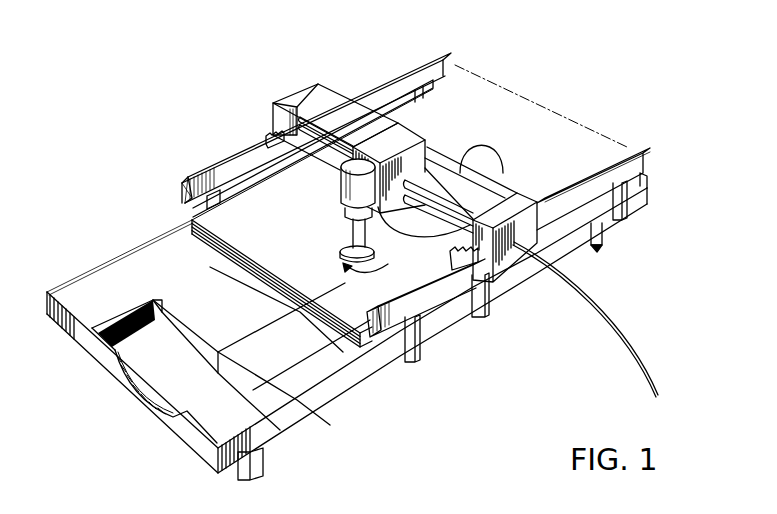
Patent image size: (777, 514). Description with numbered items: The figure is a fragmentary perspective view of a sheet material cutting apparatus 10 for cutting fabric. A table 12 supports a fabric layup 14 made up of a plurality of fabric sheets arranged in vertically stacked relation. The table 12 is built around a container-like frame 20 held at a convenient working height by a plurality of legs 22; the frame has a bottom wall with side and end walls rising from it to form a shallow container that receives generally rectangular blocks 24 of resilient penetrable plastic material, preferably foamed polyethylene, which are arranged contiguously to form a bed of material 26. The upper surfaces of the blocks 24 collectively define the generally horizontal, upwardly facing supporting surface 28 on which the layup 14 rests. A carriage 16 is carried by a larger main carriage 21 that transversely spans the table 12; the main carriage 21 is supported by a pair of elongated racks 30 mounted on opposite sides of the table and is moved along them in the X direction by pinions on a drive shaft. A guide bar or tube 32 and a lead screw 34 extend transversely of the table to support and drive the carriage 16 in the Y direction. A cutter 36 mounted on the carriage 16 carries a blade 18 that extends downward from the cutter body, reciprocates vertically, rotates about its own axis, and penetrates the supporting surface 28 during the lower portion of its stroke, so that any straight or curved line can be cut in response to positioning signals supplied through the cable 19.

The sheet material cutting apparatus 10 is at (553, 101).
The table 12 is at (289, 438).
The fabric layup 14 is at (584, 133).
The carriage 16 is at (395, 140).
The blade 18 is at (353, 231).
The cable 19 is at (637, 347).
The container-like frame 20 is at (103, 355).
The main carriage 21 is at (507, 205).
The legs 22 is at (262, 463).
The blocks 24 is at (227, 315).
The bed of material 26 is at (218, 378).
The supporting surface 28 is at (300, 377).
The racks 30 is at (200, 177).
The guide bar 32 is at (275, 138).
The lead screw 34 is at (337, 127).
The cutter 36 is at (353, 192).